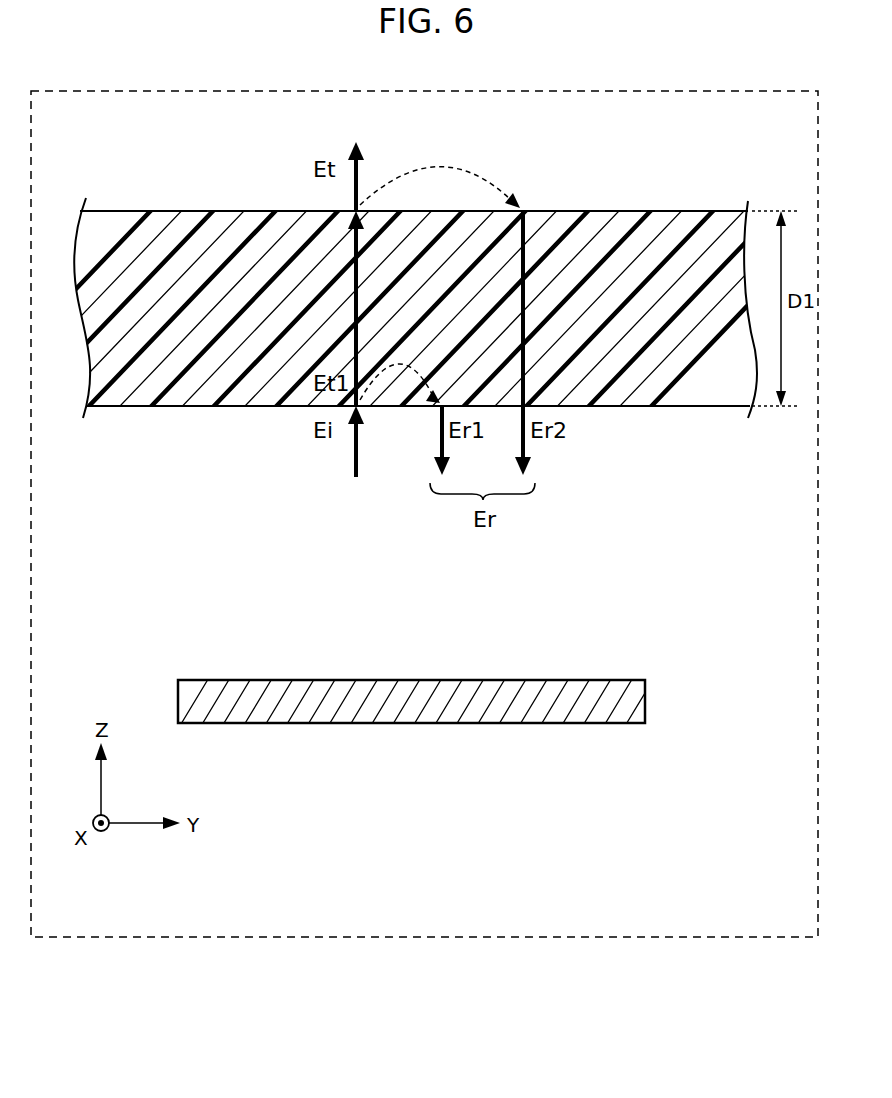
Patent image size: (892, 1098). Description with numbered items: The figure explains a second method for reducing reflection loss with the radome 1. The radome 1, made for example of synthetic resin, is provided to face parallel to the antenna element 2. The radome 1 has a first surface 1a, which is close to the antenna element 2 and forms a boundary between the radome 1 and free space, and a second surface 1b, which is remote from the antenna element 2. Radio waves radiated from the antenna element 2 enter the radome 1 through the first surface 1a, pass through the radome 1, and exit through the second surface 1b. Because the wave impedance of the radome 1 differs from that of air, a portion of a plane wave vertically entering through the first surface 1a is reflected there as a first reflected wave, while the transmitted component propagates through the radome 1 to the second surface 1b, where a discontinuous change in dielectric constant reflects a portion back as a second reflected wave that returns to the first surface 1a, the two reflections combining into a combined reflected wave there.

The radome 1 is at (128, 223).
The first surface 1a is at (174, 418).
The second surface 1b is at (176, 200).
The antenna element 2 is at (636, 706).